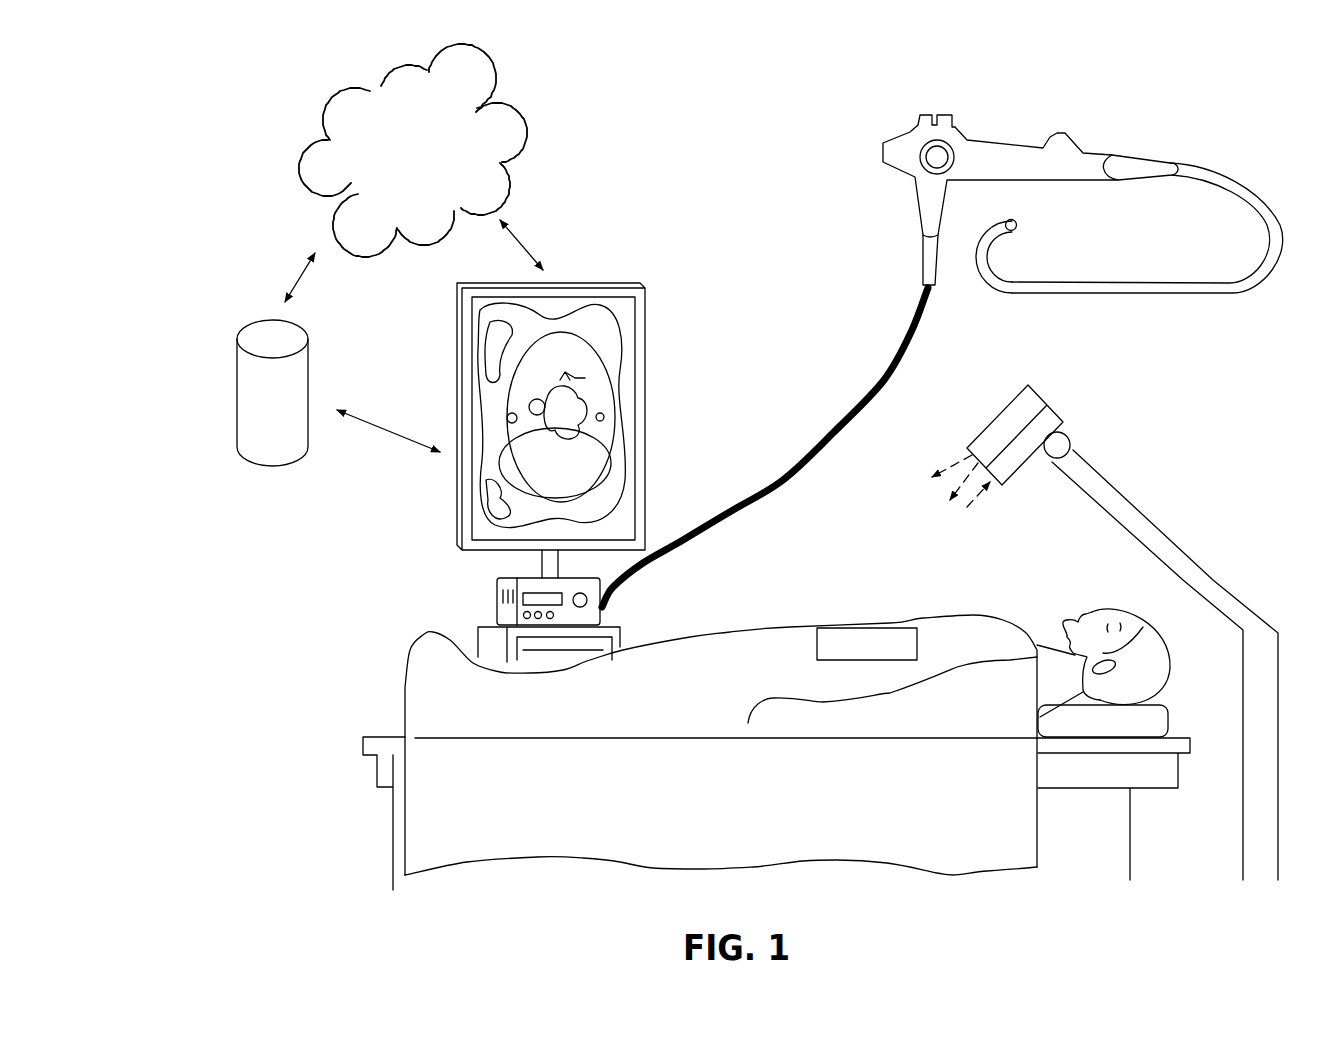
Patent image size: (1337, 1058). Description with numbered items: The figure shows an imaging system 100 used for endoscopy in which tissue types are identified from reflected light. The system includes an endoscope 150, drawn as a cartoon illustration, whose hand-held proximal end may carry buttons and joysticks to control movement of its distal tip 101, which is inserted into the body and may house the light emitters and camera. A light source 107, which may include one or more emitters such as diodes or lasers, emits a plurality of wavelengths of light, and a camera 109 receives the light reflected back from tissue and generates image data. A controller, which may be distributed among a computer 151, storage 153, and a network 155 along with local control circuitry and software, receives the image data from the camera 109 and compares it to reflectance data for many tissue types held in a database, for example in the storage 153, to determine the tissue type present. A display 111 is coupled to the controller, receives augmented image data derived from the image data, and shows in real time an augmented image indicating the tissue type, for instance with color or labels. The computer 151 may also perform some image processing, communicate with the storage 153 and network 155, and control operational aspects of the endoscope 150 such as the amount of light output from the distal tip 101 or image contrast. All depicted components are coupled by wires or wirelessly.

The imaging system 100 is at (800, 140).
The distal tip 101 is at (1013, 230).
The light source 107 is at (1030, 400).
The camera 109 is at (1062, 418).
The display 111 is at (645, 390).
The endoscope 150 is at (1093, 160).
The computer 151 is at (498, 613).
The storage 153 is at (273, 443).
The network 155 is at (470, 163).